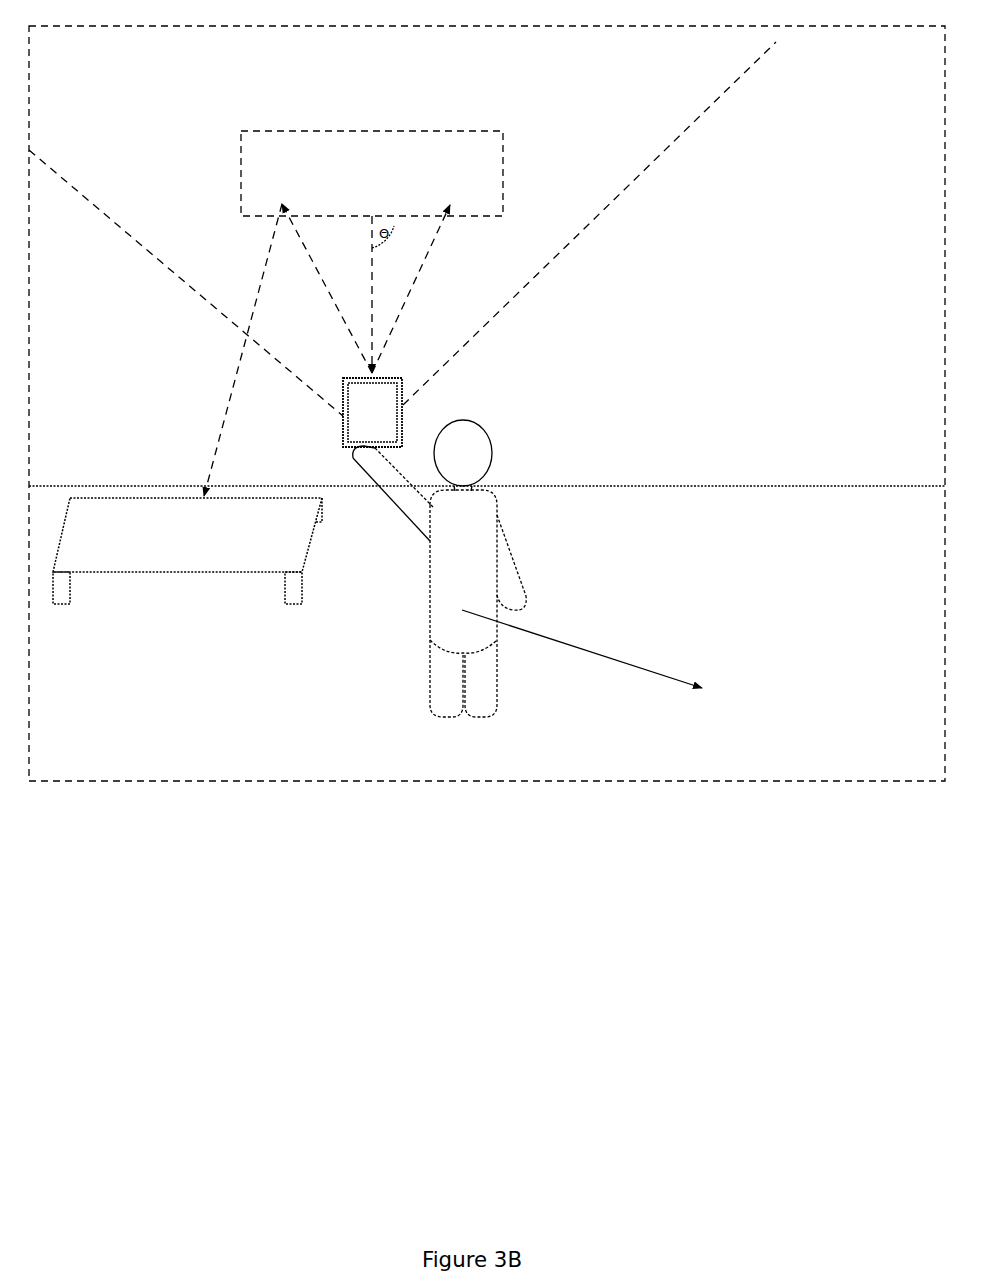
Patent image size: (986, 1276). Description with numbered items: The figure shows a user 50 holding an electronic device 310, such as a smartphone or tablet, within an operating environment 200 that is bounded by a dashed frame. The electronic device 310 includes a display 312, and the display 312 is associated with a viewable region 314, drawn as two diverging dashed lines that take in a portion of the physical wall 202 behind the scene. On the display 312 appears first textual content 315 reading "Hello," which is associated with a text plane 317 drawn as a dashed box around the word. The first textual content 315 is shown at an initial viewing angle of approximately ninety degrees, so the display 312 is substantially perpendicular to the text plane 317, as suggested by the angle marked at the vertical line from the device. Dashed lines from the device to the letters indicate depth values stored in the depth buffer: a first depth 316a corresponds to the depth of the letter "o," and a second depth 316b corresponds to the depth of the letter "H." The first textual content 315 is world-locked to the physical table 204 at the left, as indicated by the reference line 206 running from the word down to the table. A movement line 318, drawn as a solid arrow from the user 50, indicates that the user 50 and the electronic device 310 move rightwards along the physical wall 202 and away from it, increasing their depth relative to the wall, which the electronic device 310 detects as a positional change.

The operating environment 200 is at (492, 403).
The physical wall 202 is at (487, 278).
The physical table 204 is at (187, 551).
The reference line 206 is at (222, 420).
The electronic device 310 is at (346, 450).
The display 312 is at (372, 420).
The viewable region 314 is at (693, 123).
The first textual content 315 is at (275, 165).
The first depth 316a is at (433, 248).
The second depth 316b is at (350, 338).
The text plane 317 is at (485, 130).
The movement line 318 is at (680, 686).
The user 50 is at (485, 691).